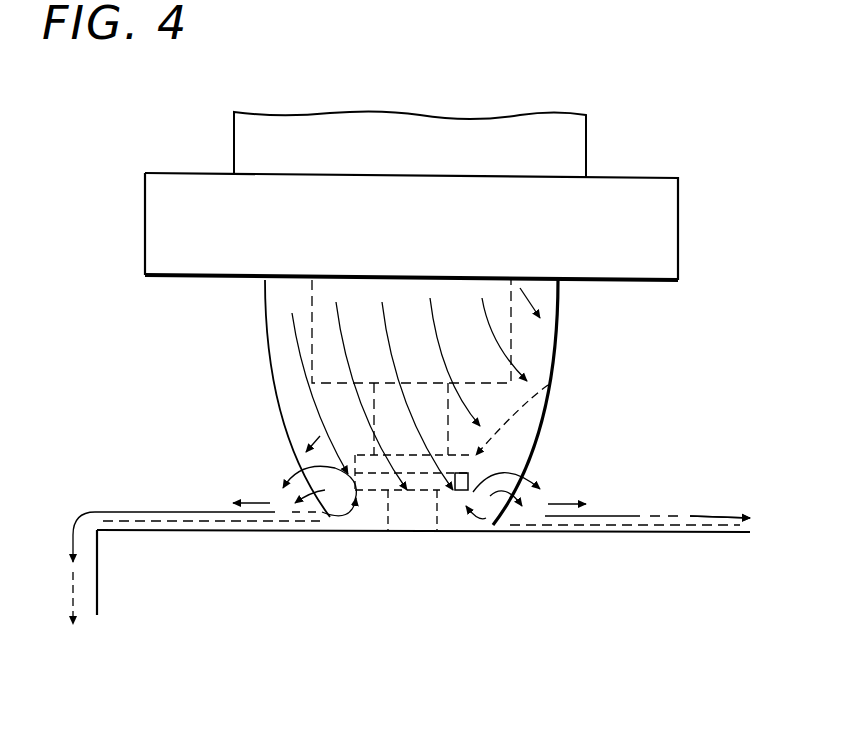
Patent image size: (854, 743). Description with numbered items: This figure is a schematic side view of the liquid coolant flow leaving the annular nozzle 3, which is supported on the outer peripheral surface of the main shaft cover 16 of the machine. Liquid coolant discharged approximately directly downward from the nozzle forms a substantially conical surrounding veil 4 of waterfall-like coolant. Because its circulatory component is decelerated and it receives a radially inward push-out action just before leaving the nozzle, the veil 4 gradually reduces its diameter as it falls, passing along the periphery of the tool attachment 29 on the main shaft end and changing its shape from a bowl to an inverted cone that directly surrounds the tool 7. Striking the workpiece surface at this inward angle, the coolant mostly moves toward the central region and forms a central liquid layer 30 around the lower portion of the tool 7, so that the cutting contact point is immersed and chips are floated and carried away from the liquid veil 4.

The main shaft cover 16 is at (568, 155).
The annular nozzle 3 is at (680, 235).
The tool attachment 29 is at (312, 313).
The surrounding veil 4 is at (558, 340).
The central liquid layer 30 is at (472, 471).
The tool 7 is at (365, 510).